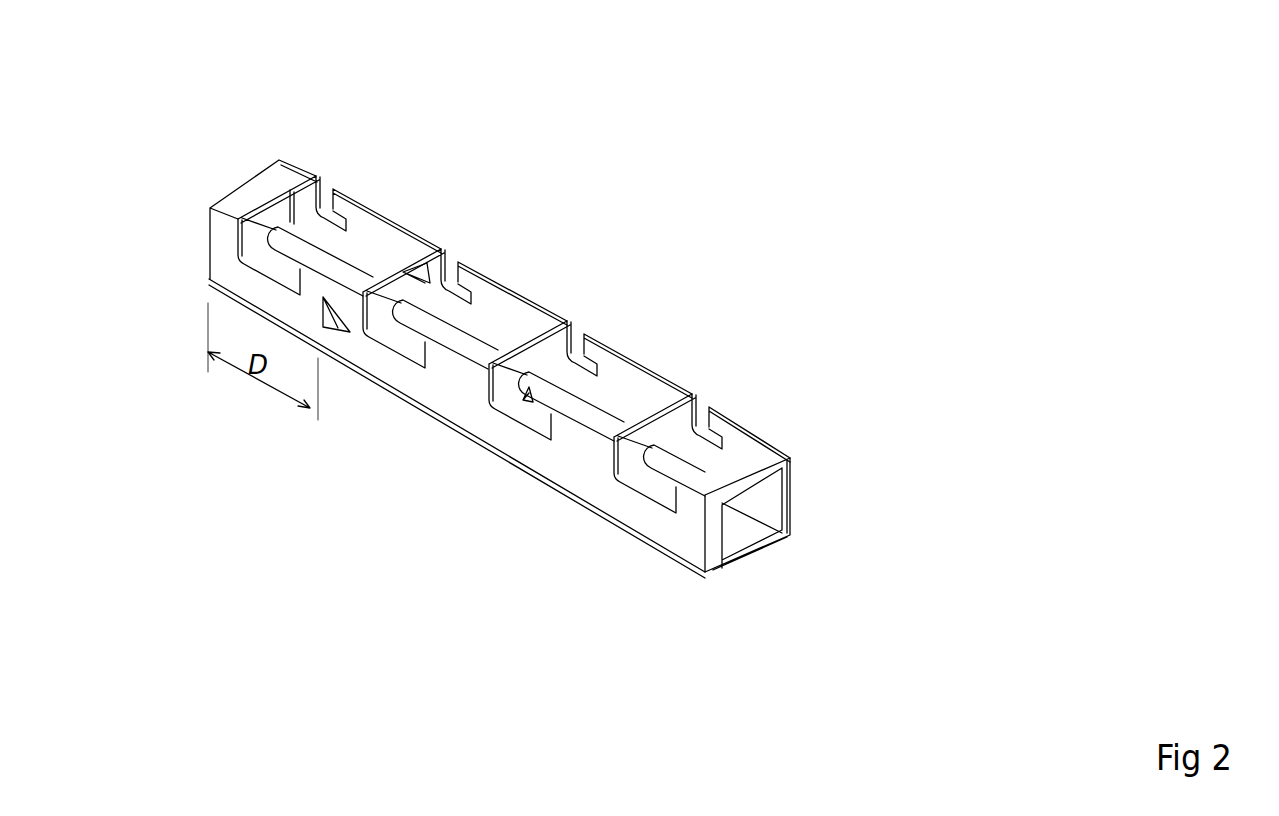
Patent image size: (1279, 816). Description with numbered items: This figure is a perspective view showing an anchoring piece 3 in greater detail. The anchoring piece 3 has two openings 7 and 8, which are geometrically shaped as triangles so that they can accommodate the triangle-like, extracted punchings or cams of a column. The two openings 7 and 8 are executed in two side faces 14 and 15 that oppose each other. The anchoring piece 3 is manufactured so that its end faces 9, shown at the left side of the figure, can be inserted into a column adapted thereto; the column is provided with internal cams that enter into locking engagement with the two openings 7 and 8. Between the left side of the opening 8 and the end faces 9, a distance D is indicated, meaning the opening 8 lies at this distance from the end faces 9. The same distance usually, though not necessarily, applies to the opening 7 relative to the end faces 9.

The anchoring piece 3 is at (907, 356).
The opening 7 is at (407, 272).
The opening 8 is at (338, 330).
The end faces 9 is at (283, 157).
The side face 14 is at (570, 468).
The side face 15 is at (322, 197).